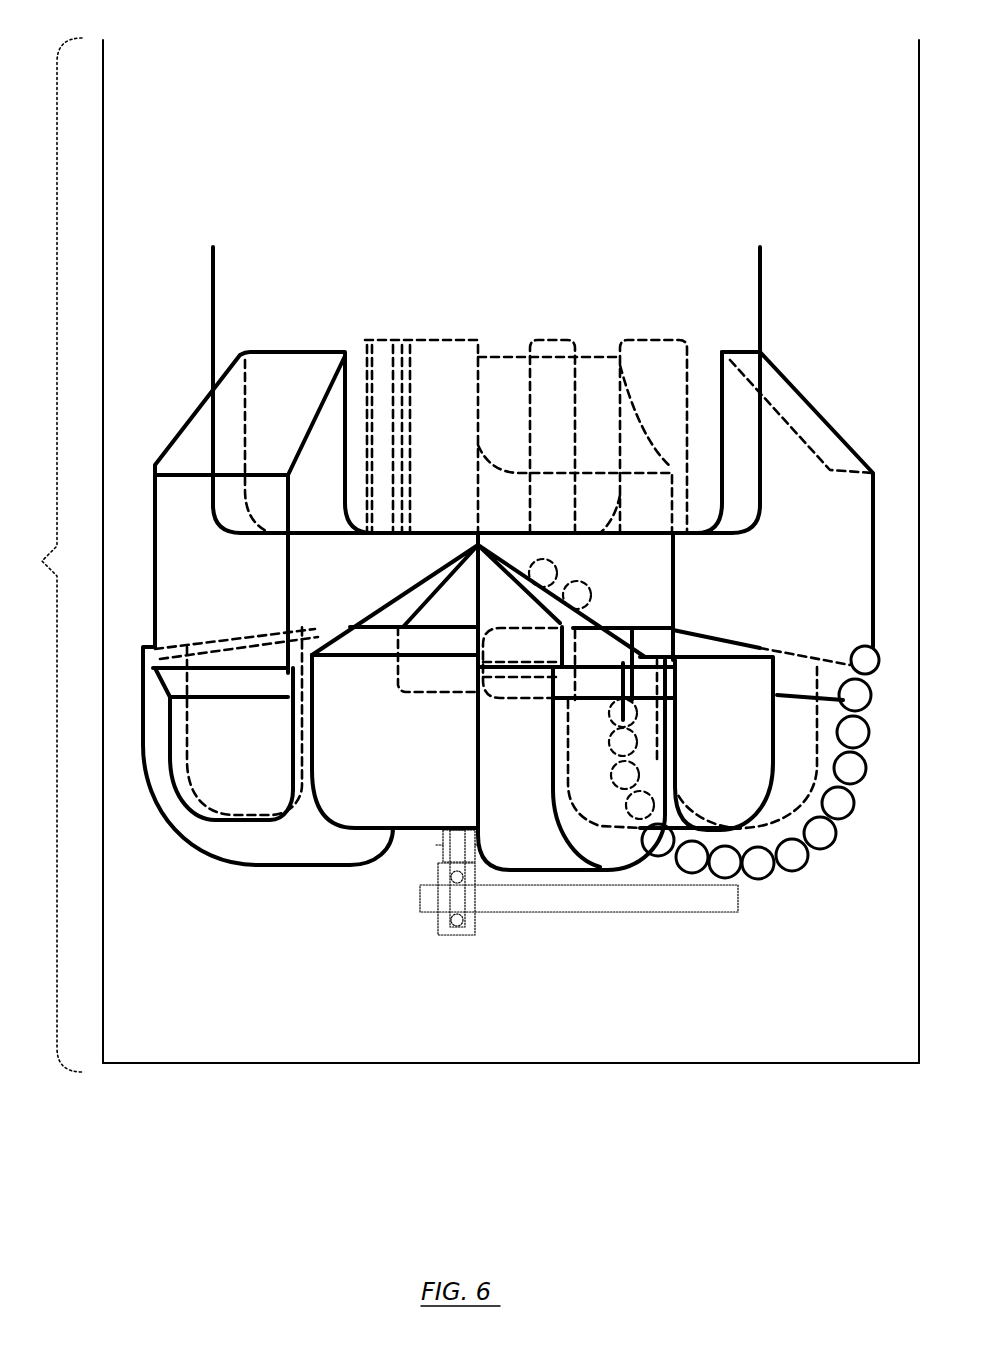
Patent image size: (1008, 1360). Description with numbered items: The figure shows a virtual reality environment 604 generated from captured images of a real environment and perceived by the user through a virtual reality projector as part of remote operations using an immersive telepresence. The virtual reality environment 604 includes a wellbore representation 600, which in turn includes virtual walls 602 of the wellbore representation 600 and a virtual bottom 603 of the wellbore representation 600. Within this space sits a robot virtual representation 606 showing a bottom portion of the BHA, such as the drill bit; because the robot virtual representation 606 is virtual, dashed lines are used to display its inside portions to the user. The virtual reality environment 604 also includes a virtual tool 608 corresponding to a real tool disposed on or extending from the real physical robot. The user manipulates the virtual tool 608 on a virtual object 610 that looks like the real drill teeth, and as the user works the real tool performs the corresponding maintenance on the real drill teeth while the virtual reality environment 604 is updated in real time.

The wellbore representation 600 is at (43, 555).
The virtual walls 602 is at (106, 146).
The virtual bottom 603 is at (318, 1070).
The virtual reality environment 604 is at (440, 44).
The robot virtual representation 606 is at (476, 316).
The virtual tool 608 is at (532, 908).
The virtual object 610 is at (778, 883).